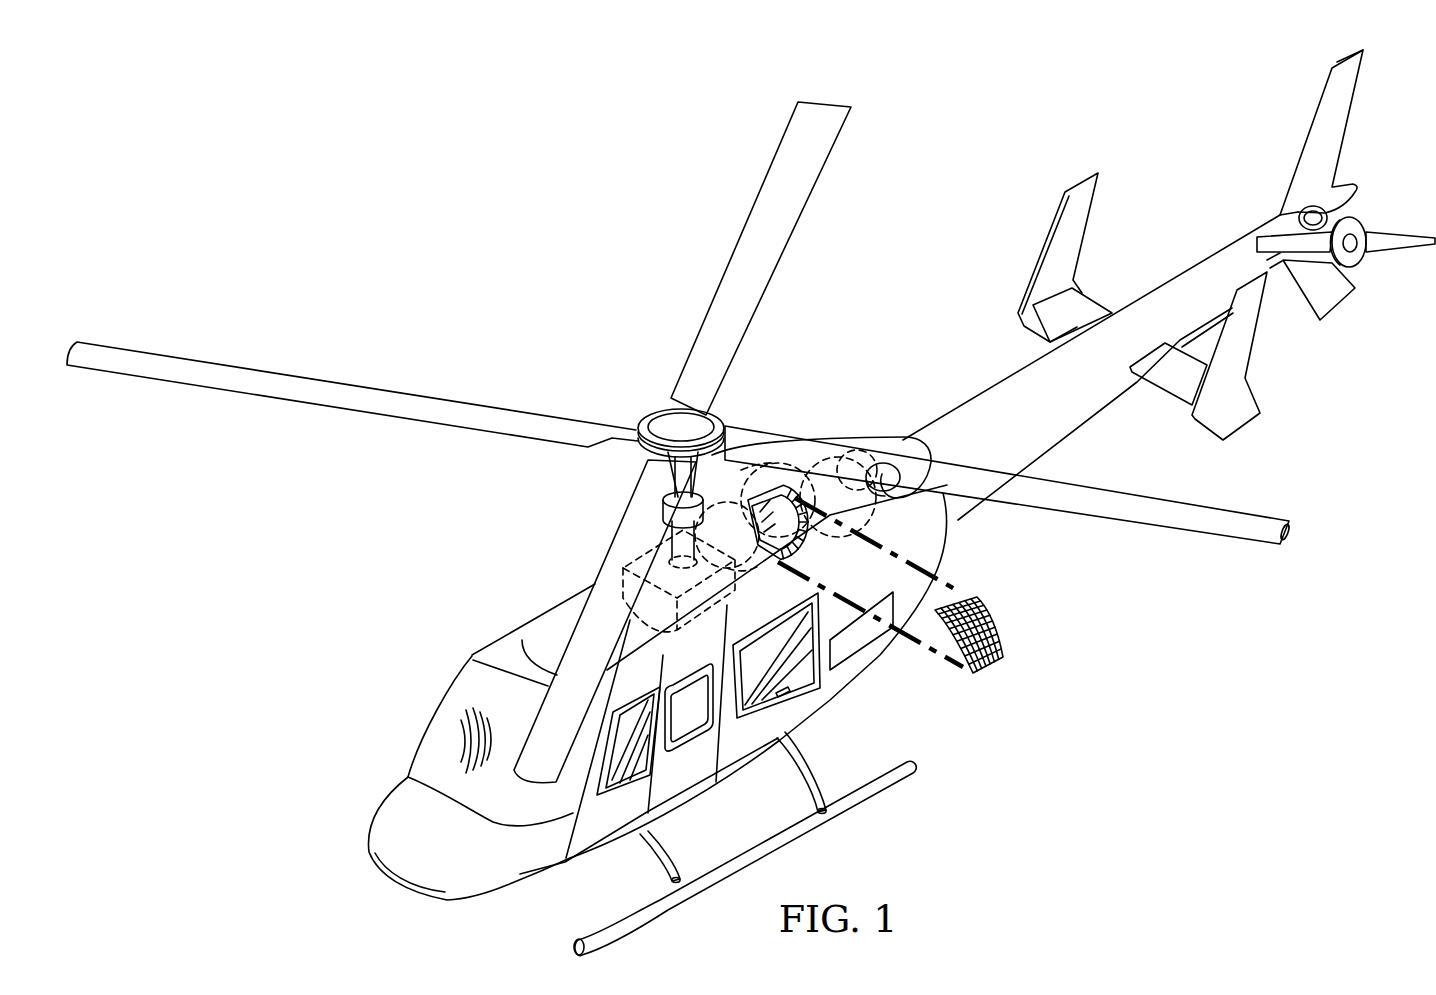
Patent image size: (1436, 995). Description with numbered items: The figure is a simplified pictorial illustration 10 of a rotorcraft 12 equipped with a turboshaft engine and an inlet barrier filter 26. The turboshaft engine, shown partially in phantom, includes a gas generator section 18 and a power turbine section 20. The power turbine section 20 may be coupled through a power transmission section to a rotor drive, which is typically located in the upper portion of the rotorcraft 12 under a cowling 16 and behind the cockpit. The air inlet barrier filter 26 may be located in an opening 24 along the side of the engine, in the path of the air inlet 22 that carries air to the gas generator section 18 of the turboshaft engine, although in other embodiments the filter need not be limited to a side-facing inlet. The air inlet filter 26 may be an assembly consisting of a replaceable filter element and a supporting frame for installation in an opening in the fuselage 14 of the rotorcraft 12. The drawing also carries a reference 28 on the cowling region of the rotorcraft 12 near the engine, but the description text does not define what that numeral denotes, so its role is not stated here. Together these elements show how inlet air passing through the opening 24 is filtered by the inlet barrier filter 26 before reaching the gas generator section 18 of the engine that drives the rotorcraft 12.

The simplified pictorial illustration 10 is at (527, 281).
The rotorcraft 12 is at (518, 627).
The fuselage 14 is at (977, 393).
The cowling 16 is at (600, 556).
The gas generator section 18 is at (772, 462).
The power turbine section 20 is at (804, 457).
The air inlet 22 is at (840, 543).
The opening 24 is at (795, 557).
The inlet barrier filter 26 is at (985, 597).
The engine cowling 28 is at (928, 460).